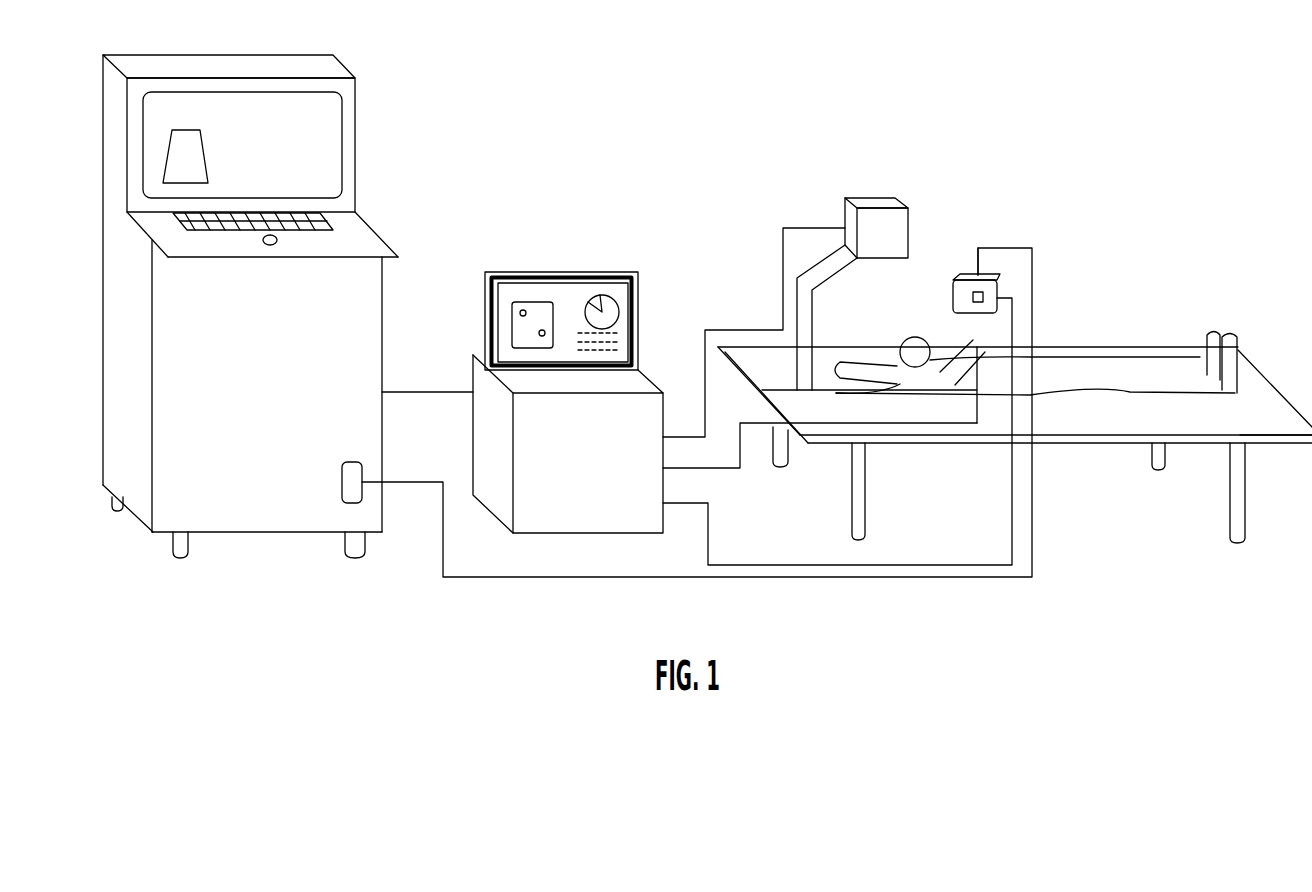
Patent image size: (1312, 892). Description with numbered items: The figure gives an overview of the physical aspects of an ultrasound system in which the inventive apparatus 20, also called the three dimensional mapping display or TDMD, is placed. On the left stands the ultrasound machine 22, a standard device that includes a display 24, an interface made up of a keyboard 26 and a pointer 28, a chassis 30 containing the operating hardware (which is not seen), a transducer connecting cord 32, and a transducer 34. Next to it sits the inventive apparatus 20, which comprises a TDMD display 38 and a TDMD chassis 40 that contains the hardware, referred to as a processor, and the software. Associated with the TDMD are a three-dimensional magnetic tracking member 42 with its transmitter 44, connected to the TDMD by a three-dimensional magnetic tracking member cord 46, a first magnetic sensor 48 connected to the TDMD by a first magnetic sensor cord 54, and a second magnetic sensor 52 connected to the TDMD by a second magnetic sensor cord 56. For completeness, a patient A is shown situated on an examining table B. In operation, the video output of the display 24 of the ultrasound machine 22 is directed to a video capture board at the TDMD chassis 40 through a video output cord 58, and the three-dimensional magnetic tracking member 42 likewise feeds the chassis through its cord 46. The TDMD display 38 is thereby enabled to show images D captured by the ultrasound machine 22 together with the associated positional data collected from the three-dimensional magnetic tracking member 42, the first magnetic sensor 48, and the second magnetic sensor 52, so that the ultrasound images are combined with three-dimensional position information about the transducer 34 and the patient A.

The inventive apparatus 20 is at (573, 243).
The ultrasound machine 22 is at (92, 127).
The display 24 is at (360, 145).
The keyboard 26 is at (378, 235).
The pointer 28 is at (273, 245).
The chassis 30 is at (110, 431).
The transducer connecting cord 32 is at (467, 578).
The transducer 34 is at (950, 293).
The TDMD display 38 is at (640, 325).
The TDMD chassis 40 is at (620, 513).
The 3D magnetic tracking member 42 is at (875, 200).
The transmitter 44 is at (912, 225).
The 3D magnetic tracking member cord 46 is at (783, 265).
The first magnetic sensor 48 is at (960, 350).
The second magnetic sensor 52 is at (973, 273).
The first magnetic sensor cord 54 is at (727, 473).
The second magnetic sensor cord 56 is at (762, 567).
The video output cord 58 is at (422, 390).
The images D is at (518, 300).
The patient A is at (1105, 360).
The examining table B is at (1288, 425).